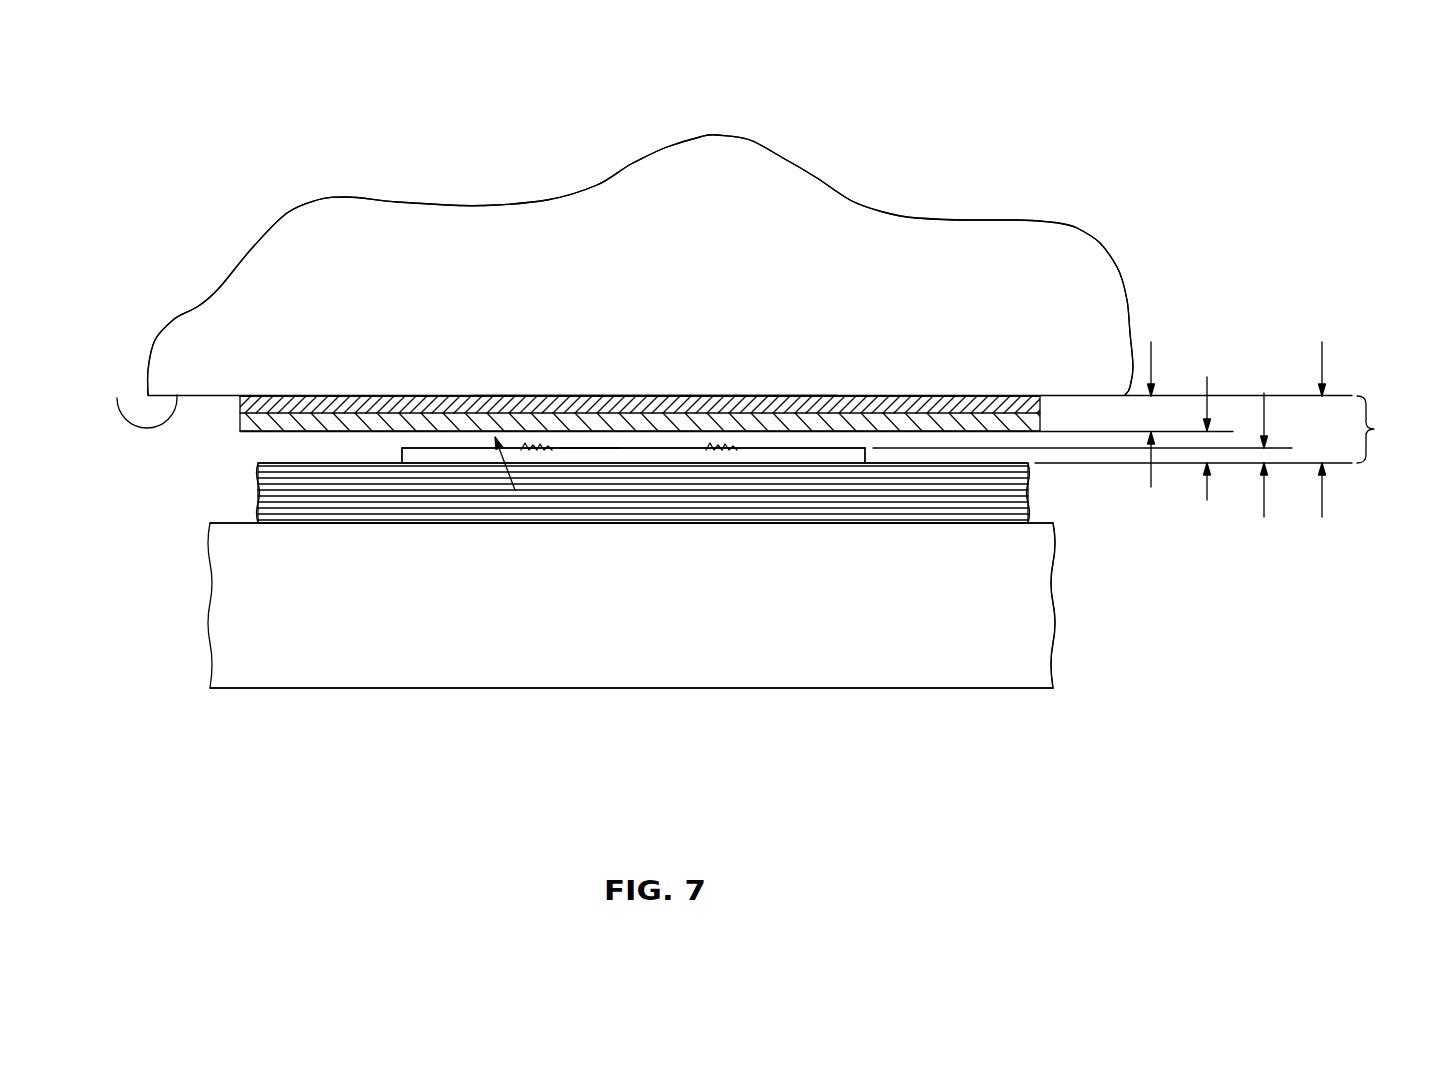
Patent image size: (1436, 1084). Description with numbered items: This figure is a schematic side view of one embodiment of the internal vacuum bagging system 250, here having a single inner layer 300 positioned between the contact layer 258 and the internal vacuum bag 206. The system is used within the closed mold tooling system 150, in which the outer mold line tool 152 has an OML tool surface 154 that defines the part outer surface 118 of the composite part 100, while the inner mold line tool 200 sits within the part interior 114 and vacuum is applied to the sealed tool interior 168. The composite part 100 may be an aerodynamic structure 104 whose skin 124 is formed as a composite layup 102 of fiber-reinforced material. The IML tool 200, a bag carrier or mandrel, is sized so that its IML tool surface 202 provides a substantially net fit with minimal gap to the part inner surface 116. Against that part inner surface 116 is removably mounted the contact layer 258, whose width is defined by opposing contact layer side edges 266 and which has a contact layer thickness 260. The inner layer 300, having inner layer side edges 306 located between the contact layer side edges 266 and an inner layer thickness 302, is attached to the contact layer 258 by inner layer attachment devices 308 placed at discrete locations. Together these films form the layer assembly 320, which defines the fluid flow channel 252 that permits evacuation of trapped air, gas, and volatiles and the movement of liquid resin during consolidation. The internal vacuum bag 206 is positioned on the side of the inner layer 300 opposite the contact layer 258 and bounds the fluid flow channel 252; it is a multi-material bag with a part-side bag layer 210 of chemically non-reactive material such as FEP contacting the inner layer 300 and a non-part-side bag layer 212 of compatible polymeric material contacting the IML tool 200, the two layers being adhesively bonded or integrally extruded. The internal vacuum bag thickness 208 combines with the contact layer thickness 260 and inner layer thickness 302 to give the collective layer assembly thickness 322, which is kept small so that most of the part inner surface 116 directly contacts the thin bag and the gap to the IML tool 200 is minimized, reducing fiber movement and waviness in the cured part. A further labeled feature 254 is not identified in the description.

The composite part 100 is at (312, 510).
The composite layup 102 is at (288, 517).
The aerodynamic structure 104 is at (273, 513).
The part interior 114 is at (197, 503).
The part inner surface 116 is at (262, 462).
The part outer surface 118 is at (262, 518).
The skin 124 is at (273, 503).
The closed mold tooling system 150 is at (1035, 692).
The outer mold line (OML) tool 152 is at (930, 690).
The OML tool surface 154 is at (940, 522).
The tool interior 168 is at (1052, 509).
The inner mold line (IML) tool 200 is at (350, 197).
The IML tool surface 202 is at (117, 398).
The internal vacuum bag 206 is at (363, 395).
The internal vacuum bag thickness 208 is at (1152, 367).
The part-side bag layer 210 is at (995, 395).
The non-part-side bag layer 212 is at (1042, 421).
The vacuum bagging system 250 is at (1122, 214).
The fluid flow channel 252 is at (675, 442).
The gap 254 is at (627, 448).
The contact layer 258 is at (592, 455).
The contact layer thickness 260 is at (1264, 517).
The contact layer side edges 266 is at (404, 466).
The inner layer 300 is at (592, 440).
The inner layer thickness 302 is at (1207, 500).
The inner layer side edges 306 is at (483, 443).
The inner layer attachment devices 308 is at (540, 452).
The layer assembly 320 is at (1150, 429).
The layer assembly thickness 322 is at (1322, 517).